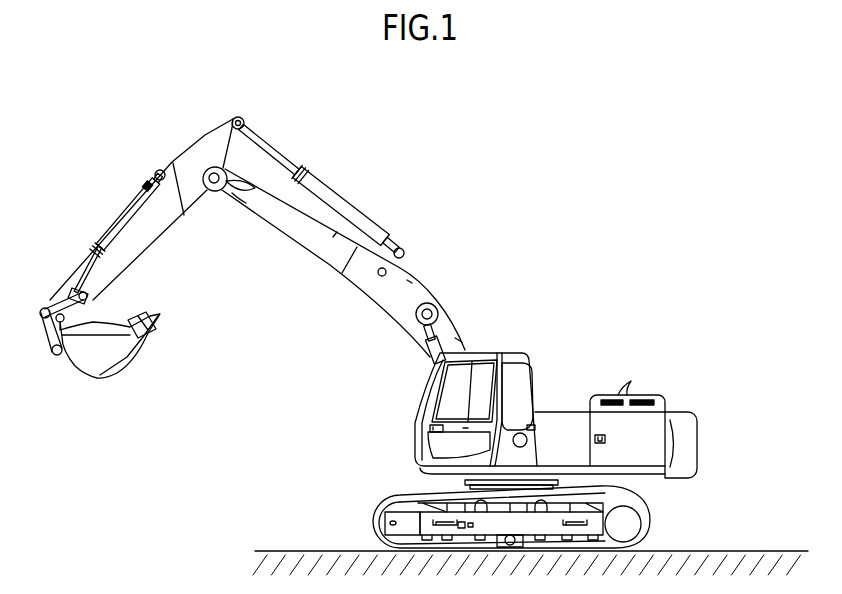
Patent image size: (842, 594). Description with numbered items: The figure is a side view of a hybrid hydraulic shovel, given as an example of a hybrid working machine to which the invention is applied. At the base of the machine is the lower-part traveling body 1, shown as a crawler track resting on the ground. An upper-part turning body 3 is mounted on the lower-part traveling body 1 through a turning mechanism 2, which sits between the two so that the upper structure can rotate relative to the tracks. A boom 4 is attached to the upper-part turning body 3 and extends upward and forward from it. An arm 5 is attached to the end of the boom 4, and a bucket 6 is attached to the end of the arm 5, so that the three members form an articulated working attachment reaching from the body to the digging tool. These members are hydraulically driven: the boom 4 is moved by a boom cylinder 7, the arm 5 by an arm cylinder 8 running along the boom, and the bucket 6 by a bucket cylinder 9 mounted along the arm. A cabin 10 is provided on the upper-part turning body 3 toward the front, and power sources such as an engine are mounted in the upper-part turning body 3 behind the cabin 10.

The lower-part traveling body 1 is at (373, 523).
The turning mechanism 2 is at (557, 483).
The upper-part turning body 3 is at (565, 411).
The boom 4 is at (367, 282).
The arm 5 is at (163, 227).
The bucket 6 is at (100, 378).
The boom cylinder 7 is at (422, 343).
The arm cylinder 8 is at (357, 215).
The bucket cylinder 9 is at (123, 216).
The cabin 10 is at (530, 353).